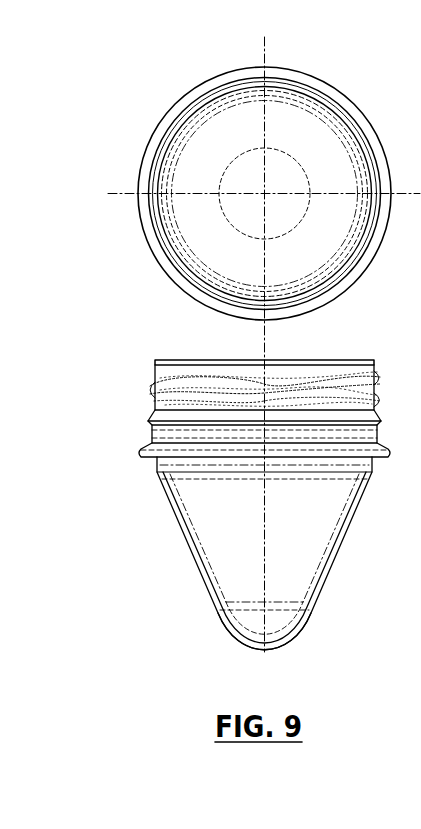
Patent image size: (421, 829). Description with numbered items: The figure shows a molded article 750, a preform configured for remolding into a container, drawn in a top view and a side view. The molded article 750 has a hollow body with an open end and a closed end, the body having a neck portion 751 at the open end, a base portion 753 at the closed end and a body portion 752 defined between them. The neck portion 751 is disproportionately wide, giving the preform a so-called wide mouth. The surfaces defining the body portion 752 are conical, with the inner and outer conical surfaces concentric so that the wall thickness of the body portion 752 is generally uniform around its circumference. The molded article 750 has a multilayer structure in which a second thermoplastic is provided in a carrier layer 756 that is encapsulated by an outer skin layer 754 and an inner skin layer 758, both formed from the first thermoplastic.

The molded article 750 is at (137, 319).
The neck portion 751 is at (319, 370).
The body portion 752 is at (349, 538).
The base portion 753 is at (321, 627).
The outer skin layer 754 is at (180, 532).
The carrier layer 756 is at (188, 558).
The inner skin layer 758 is at (193, 540).